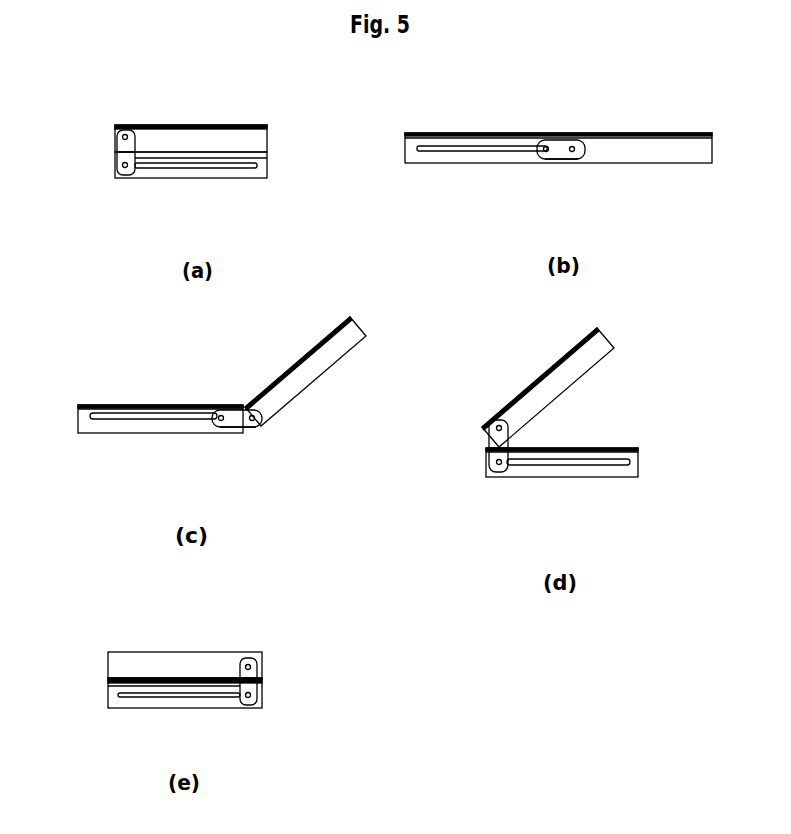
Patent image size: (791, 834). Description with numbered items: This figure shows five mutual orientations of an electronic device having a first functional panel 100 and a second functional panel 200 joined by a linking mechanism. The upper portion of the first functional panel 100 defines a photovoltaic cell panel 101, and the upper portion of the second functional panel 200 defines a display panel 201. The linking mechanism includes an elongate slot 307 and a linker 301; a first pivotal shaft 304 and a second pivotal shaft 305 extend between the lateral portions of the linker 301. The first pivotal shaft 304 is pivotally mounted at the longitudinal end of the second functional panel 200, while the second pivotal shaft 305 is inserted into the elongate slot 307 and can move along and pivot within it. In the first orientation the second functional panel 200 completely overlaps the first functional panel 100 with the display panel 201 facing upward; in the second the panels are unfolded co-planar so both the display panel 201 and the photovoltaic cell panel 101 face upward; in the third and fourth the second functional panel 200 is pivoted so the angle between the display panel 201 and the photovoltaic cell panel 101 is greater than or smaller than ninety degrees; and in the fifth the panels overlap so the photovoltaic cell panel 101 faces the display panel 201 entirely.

The first functional panel 100 is at (268, 167).
The photovoltaic cell panel 101 is at (266, 176).
The second functional panel 200 is at (269, 134).
The display panel 201 is at (240, 125).
The linker 301 is at (120, 152).
The first pivotal shaft 304 is at (122, 130).
The second pivotal shaft 305 is at (126, 168).
The elongate slot 307 is at (235, 168).